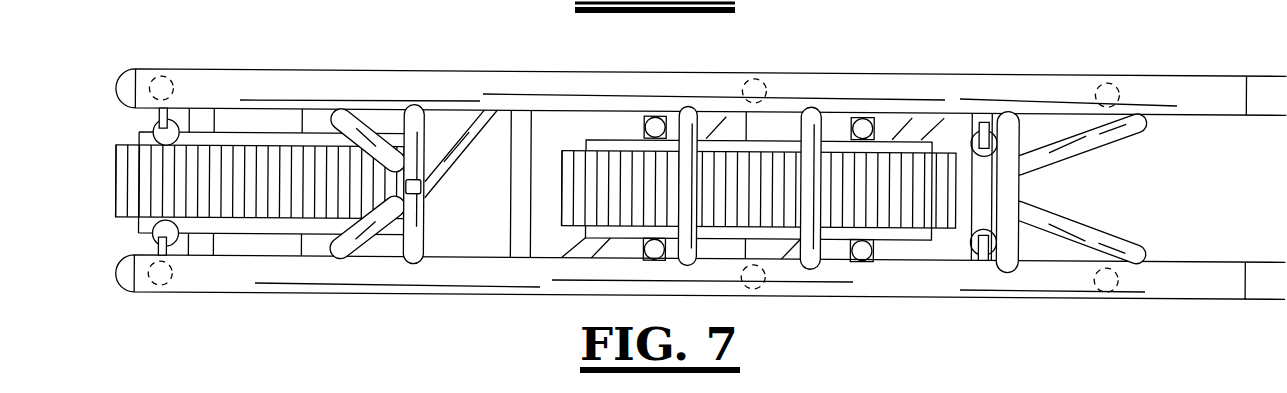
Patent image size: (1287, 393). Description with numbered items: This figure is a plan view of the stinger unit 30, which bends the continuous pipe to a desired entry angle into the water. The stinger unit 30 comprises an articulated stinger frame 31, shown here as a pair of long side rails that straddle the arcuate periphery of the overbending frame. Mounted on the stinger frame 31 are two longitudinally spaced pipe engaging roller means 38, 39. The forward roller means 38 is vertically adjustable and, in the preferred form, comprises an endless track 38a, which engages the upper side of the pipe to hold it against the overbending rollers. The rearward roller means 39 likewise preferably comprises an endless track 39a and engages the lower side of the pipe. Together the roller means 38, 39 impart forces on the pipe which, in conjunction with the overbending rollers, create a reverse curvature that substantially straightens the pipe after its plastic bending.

The stinger unit 30 is at (1000, 62).
The articulated stinger frame 31 is at (1181, 85).
The forward pipe engaging roller means 38 is at (783, 142).
The endless track 38a is at (568, 163).
The rearward pipe engaging roller means 39 is at (281, 141).
The endless track 39a is at (122, 183).